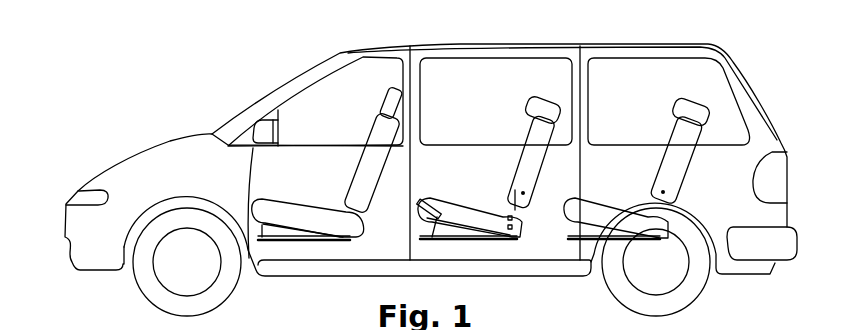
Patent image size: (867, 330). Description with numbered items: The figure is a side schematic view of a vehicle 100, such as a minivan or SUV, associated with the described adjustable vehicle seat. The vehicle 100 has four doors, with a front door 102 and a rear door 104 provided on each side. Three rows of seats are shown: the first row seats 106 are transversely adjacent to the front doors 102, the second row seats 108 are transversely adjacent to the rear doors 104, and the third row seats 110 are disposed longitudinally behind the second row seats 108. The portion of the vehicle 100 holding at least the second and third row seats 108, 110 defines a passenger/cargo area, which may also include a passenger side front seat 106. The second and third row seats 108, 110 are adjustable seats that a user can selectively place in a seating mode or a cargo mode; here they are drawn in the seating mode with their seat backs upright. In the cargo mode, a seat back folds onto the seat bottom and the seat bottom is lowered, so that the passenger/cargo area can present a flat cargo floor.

The vehicle 100 is at (150, 65).
The front door 102 is at (320, 93).
The rear door 104 is at (452, 70).
The first row seat 106 is at (393, 118).
The second row seat 108 is at (545, 117).
The third row seat 110 is at (693, 123).